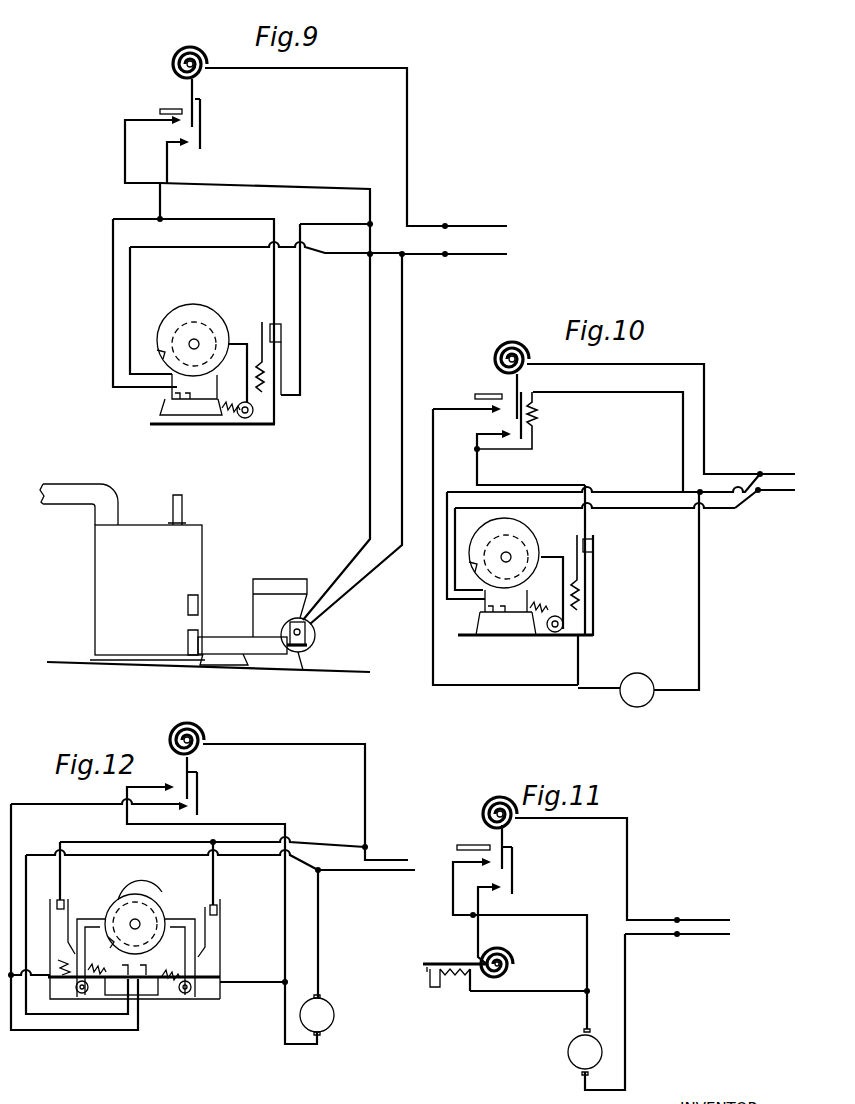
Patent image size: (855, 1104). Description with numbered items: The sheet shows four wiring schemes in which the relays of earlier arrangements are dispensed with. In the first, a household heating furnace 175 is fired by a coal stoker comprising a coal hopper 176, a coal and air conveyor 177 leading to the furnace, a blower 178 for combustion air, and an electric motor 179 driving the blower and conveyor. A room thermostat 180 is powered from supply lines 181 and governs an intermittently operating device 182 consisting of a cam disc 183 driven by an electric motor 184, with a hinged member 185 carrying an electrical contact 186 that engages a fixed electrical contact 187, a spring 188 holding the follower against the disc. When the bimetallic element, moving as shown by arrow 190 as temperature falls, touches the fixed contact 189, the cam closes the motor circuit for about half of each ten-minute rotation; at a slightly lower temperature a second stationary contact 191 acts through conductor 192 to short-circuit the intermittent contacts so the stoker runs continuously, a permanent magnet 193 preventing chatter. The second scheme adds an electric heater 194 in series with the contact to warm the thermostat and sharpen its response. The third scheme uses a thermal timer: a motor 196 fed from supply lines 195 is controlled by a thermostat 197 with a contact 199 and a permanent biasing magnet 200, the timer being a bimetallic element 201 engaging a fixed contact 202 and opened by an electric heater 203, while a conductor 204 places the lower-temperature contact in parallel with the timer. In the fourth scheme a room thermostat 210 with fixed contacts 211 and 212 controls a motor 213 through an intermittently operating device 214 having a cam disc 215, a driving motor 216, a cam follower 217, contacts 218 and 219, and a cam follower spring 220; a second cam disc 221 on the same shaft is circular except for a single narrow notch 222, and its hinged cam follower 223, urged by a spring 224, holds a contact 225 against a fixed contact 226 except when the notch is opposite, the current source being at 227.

In FIG. 9, the household heating furnace 175 is at (188, 533).
In FIG. 9, the coal hopper 176 is at (289, 584).
In FIG. 9, the coal and air conveyor 177 is at (213, 639).
In FIG. 9, the blower 178 is at (316, 633).
In FIG. 9, the electric motor 179 is at (308, 643).
In FIG. 10, the electric motor 179 is at (637, 675).
In FIG. 9, the thermostat 180 is at (197, 47).
In FIG. 10, the thermostat 180 is at (517, 342).
In FIG. 9, the supply lines 181 is at (466, 250).
In FIG. 10, the supply lines 181 is at (770, 487).
In FIG. 9, the intermittently operating device 182 is at (193, 296).
In FIG. 10, the intermittently operating device 182 is at (543, 531).
In FIG. 9, the cam disc 183 is at (166, 318).
In FIG. 10, the cam disc 183 is at (483, 536).
In FIG. 9, the electric motor 184 is at (200, 388).
In FIG. 10, the electric motor 184 is at (512, 600).
In FIG. 9, the hinged member 185 is at (233, 337).
In FIG. 10, the hinged member 185 is at (548, 553).
In FIG. 9, the electrical contact 186 is at (262, 318).
In FIG. 10, the electrical contact 186 is at (583, 531).
In FIG. 9, the fixed electrical contact 187 is at (282, 338).
In FIG. 10, the fixed electrical contact 187 is at (595, 560).
In FIG. 9, the spring 188 is at (222, 413).
In FIG. 10, the spring 188 is at (535, 623).
In FIG. 11, the spring 188 is at (505, 888).
In FIG. 9, the fixed contact 189 is at (188, 147).
In FIG. 10, the fixed contact 189 is at (513, 443).
In FIG. 9, the arrow 190 is at (186, 93).
In FIG. 9, the second stationary contact 191 is at (178, 122).
In FIG. 10, the second stationary contact 191 is at (497, 411).
In FIG. 9, the conductor 192 is at (273, 184).
In FIG. 10, the conductor 192 is at (433, 596).
In FIG. 9, the permanent magnet 193 is at (160, 107).
In FIG. 10, the permanent magnet 193 is at (478, 390).
In FIG. 10, the electric heater 194 is at (538, 416).
In FIG. 11, the supply lines 195 is at (688, 932).
In FIG. 11, the motor 196 is at (573, 1055).
In FIG. 11, the thermostat 197 is at (489, 800).
In FIG. 11, the contact 199 is at (485, 858).
In FIG. 11, the permanent biasing magnet 200 is at (461, 842).
In FIG. 11, the bimetallic element 201 is at (449, 960).
In FIG. 11, the fixed contact 202 is at (424, 968).
In FIG. 11, the electric heater 203 is at (455, 973).
In FIG. 11, the conductor 204 is at (562, 912).
In FIG. 12, the room thermostat 210 is at (198, 727).
In FIG. 12, the fixed contact 211 is at (176, 784).
In FIG. 12, the fixed contact 212 is at (180, 806).
In FIG. 12, the motor 213 is at (330, 1008).
In FIG. 12, the intermittently operating device 214 is at (220, 1013).
In FIG. 12, the cam disc 215 is at (163, 895).
In FIG. 12, the driving motor 216 is at (148, 995).
In FIG. 12, the cam follower 217 is at (173, 918).
In FIG. 12, the contact 218 is at (202, 901).
In FIG. 12, the contact 219 is at (222, 922).
In FIG. 12, the cam follower spring 220 is at (160, 994).
In FIG. 12, the second cam disc 221 is at (139, 914).
In FIG. 12, the notch 222 is at (117, 900).
In FIG. 12, the hinged cam follower 223 is at (87, 924).
In FIG. 12, the spring 224 is at (133, 963).
In FIG. 12, the contact 225 is at (70, 898).
In FIG. 12, the fixed contact 226 is at (59, 896).
In FIG. 12, the source of current 227 is at (387, 867).